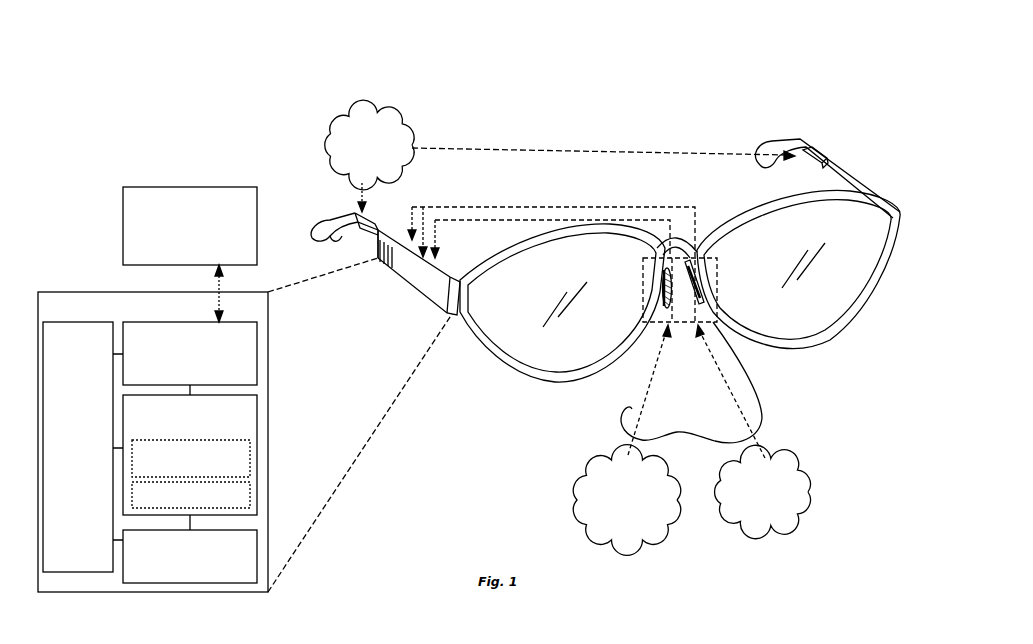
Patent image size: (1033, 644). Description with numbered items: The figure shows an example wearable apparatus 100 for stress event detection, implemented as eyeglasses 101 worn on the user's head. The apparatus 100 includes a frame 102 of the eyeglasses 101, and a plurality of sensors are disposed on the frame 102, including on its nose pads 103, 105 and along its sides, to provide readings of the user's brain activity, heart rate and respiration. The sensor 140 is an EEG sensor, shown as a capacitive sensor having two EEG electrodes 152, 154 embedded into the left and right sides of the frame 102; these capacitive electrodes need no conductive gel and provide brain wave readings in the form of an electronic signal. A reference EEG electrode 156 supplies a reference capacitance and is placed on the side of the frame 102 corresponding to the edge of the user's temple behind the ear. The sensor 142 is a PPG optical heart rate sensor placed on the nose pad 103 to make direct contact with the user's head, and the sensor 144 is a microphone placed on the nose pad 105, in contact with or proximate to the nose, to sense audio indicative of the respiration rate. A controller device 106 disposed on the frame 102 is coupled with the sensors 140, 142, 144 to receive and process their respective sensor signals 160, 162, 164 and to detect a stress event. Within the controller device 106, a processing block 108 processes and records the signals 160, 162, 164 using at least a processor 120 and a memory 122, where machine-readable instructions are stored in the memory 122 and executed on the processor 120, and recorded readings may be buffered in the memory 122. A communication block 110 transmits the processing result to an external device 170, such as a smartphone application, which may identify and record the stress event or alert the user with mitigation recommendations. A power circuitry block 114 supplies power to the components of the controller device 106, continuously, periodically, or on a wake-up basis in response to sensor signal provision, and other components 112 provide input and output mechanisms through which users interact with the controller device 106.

The apparatus 100 is at (469, 88).
The eyeglasses 101 is at (765, 135).
The frame 102 is at (490, 366).
The nose pad 103 is at (700, 290).
The nose pad 105 is at (662, 290).
The controller device 106 is at (249, 411).
The processing block 108 is at (190, 455).
The communication block 110 is at (190, 353).
The other components 112 is at (190, 556).
The power circuitry block 114 is at (78, 447).
The processor 120 is at (191, 458).
The memory 122 is at (191, 495).
The sensor 140 is at (800, 162).
The sensor 142 is at (718, 268).
The sensor 144 is at (655, 305).
The EEG electrode 152 is at (357, 214).
The EEG electrode 154 is at (822, 150).
The reference EEG electrode 156 is at (340, 238).
The sensor signal 160 is at (413, 207).
The sensor signal 162 is at (668, 208).
The sensor signal 164 is at (620, 218).
The external device 170 is at (190, 226).